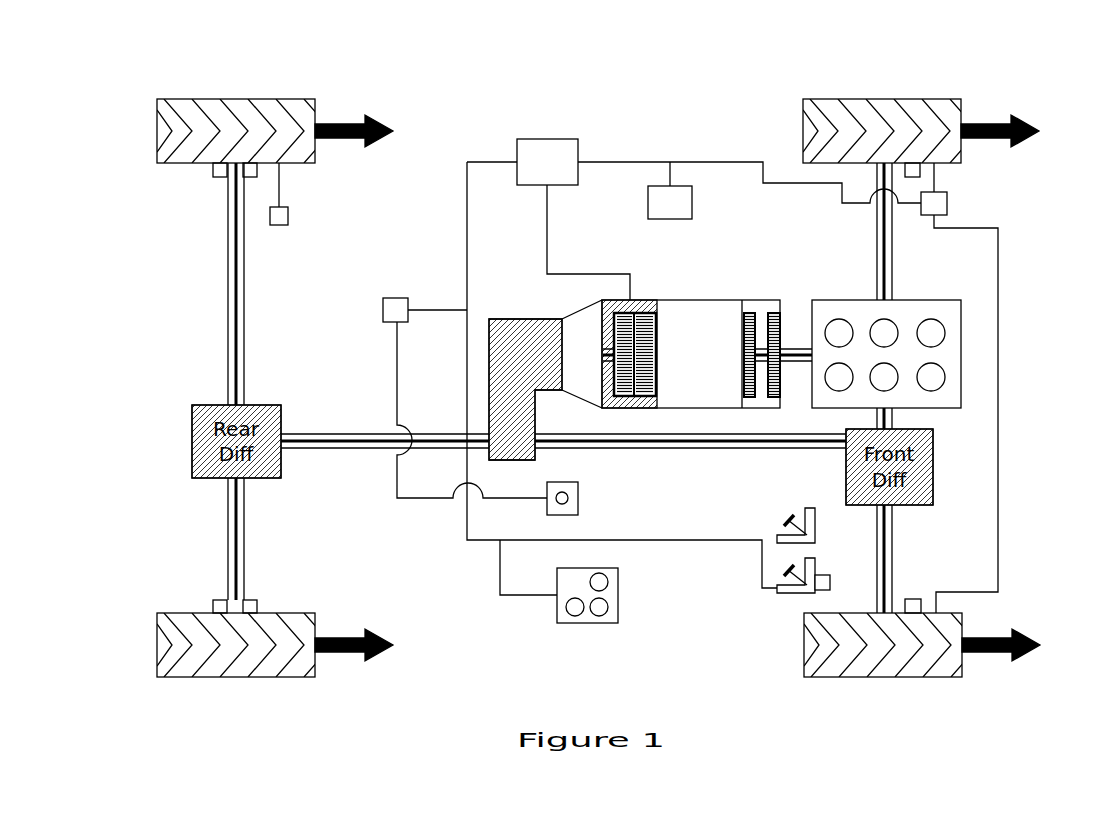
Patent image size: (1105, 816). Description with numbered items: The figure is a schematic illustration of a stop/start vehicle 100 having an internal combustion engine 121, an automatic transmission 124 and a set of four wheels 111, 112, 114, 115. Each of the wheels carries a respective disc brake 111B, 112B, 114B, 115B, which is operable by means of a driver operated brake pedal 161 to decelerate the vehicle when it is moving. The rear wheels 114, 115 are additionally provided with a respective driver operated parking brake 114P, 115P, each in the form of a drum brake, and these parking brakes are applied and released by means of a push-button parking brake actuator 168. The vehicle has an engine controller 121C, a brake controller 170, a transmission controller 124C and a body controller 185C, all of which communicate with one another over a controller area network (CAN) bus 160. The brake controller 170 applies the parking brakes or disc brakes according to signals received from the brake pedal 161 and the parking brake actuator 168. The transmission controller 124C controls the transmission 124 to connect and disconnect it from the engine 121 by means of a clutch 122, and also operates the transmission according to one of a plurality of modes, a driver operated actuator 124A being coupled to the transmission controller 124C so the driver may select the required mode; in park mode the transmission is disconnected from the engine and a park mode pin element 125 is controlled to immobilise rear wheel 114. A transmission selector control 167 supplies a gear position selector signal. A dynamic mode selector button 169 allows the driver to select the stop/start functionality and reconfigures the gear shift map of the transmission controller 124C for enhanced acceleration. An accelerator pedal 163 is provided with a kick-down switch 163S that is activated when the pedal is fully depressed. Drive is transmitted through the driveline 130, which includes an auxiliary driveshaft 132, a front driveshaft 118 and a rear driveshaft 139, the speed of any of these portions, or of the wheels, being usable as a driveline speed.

The stop/start vehicle 100 is at (163, 68).
The driveline 130 is at (448, 613).
The wheel 111 is at (945, 106).
The wheel 112 is at (945, 668).
The rear wheel 114 is at (290, 108).
The rear wheel 115 is at (190, 668).
The disc brake 111B is at (912, 167).
The disc brake 112B is at (912, 612).
The disc brake 114B is at (249, 167).
The disc brake 115B is at (250, 608).
The parking brake 114P is at (218, 172).
The parking brake 115P is at (218, 606).
The front driveshaft 118 is at (891, 265).
The internal combustion engine 121 is at (952, 347).
The engine controller 121C is at (540, 150).
The clutch 122 is at (763, 300).
The automatic transmission 124 is at (632, 400).
The driver operated actuator 124A is at (568, 502).
The transmission controller 124C is at (383, 310).
The park mode pin element 125 is at (281, 190).
The auxiliary driveshaft 132 is at (350, 450).
The rear driveshaft 139 is at (230, 296).
The controller area network (CAN) bus 160 is at (637, 160).
The brake pedal 161 is at (785, 522).
The accelerator pedal 163 is at (785, 572).
The kick-down switch 163S is at (822, 592).
The transmission selector control 167 is at (605, 587).
The parking brake actuator 168 is at (600, 612).
The dynamic mode selector button 169 is at (570, 607).
The brake controller 170 is at (940, 205).
The body controller 185C is at (673, 213).